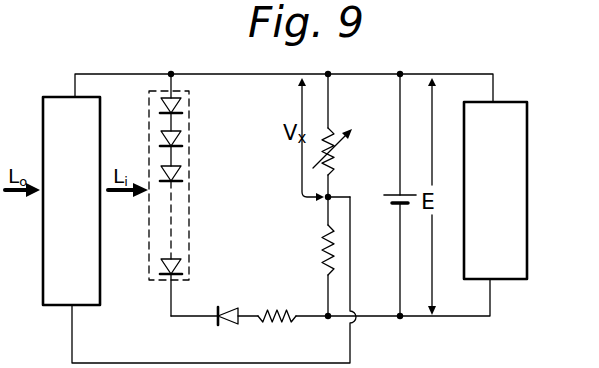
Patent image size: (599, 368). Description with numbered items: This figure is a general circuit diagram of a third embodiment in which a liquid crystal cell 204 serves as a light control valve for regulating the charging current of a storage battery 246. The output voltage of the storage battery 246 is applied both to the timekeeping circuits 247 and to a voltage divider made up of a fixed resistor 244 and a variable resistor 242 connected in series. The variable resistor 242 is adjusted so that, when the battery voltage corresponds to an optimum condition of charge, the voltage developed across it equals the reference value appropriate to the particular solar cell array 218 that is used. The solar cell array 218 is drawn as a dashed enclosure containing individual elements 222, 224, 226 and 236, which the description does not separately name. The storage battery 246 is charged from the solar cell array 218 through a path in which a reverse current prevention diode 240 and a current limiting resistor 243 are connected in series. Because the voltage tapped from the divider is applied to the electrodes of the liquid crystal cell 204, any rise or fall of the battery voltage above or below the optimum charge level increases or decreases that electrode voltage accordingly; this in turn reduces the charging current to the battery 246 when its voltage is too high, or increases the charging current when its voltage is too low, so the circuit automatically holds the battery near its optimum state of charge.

The liquid crystal cell 204 is at (55, 307).
The solar cell array 218 is at (149, 93).
The light emitting diode 222 is at (181, 107).
The light emitting diode 224 is at (181, 141).
The light emitting diode 226 is at (181, 176).
The light emitting diode 236 is at (181, 266).
The reverse current prevention diode 240 is at (224, 308).
The variable resistor 242 is at (333, 141).
The current limiting resistor 243 is at (283, 321).
The fixed resistor 244 is at (322, 249).
The storage battery 246 is at (386, 196).
The timekeeping circuits 247 is at (527, 252).